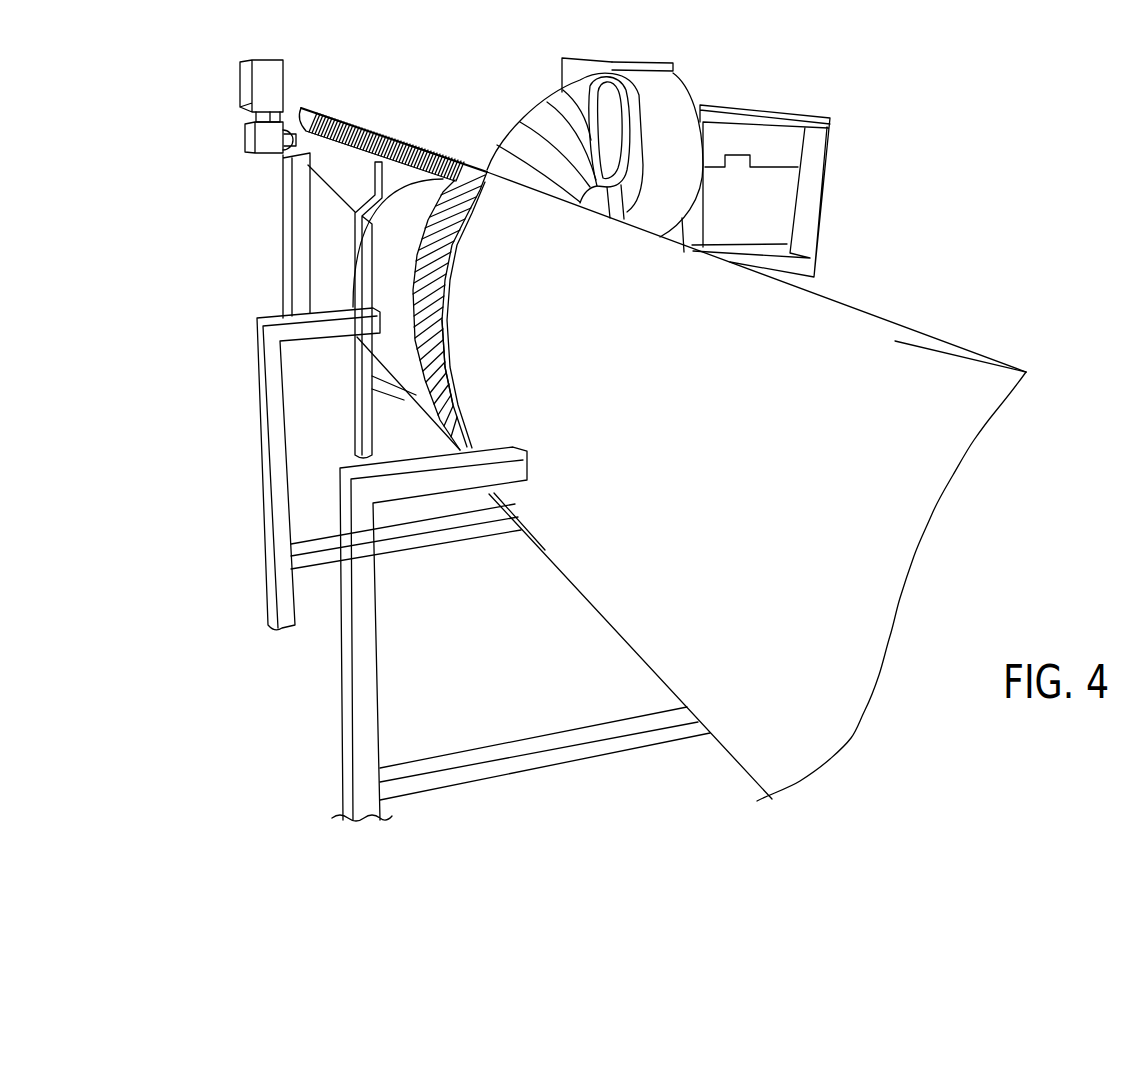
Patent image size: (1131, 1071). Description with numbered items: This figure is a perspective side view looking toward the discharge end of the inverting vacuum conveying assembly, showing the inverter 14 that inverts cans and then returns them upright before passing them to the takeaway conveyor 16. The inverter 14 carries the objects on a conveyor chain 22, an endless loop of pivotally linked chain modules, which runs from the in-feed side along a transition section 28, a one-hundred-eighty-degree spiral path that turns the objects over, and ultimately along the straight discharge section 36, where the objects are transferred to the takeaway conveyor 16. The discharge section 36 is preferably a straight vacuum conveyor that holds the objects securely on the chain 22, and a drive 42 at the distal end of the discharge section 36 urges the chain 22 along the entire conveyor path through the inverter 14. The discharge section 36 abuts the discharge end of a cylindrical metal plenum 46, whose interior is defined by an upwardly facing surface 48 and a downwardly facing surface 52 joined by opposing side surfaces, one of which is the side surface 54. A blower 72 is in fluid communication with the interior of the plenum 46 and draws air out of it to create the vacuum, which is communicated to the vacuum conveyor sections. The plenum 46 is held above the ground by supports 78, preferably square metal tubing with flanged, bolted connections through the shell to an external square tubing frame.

The inverter 14 is at (689, 486).
The takeaway conveyor 16 is at (375, 118).
The conveyor chain 22 is at (455, 162).
The transition section 28 is at (448, 302).
The discharge section 36 is at (336, 144).
The drive 42 is at (283, 60).
The plenum 46 is at (896, 514).
The upwardly facing surface 48 is at (897, 341).
The downwardly facing surface 52 is at (644, 689).
The side surface 54 is at (717, 501).
The blower 72 is at (675, 67).
The supports 78 is at (263, 405).